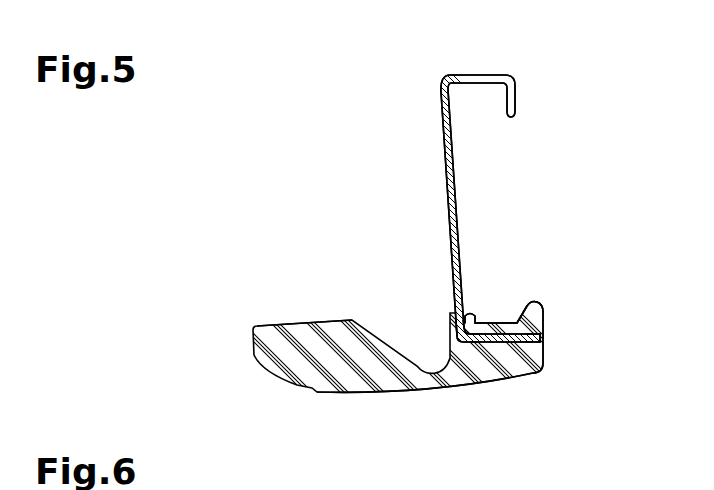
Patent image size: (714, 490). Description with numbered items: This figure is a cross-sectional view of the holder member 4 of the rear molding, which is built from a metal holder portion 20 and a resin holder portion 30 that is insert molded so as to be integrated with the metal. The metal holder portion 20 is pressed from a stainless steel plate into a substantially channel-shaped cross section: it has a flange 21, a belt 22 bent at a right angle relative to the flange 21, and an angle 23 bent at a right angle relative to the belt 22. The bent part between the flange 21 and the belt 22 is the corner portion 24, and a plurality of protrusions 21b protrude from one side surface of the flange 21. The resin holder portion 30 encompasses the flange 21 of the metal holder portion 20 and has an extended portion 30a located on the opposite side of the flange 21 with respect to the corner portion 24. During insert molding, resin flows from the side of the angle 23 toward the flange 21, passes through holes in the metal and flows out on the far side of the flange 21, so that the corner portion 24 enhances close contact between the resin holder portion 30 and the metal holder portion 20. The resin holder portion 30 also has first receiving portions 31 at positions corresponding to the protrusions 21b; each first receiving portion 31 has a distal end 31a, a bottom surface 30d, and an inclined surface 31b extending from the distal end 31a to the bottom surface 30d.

The holder member 4 is at (357, 146).
The metal holder portion 20 is at (445, 168).
The flange 21 is at (493, 340).
The protrusions 21b is at (525, 353).
The belt 22 is at (452, 151).
The angle 23 is at (478, 73).
The corner portion 24 is at (475, 323).
The resin holder portion 30 is at (445, 350).
The extended portion 30a is at (318, 343).
The bottom surface 30d is at (373, 390).
The first receiving portions 31 is at (543, 307).
The distal end 31a is at (535, 300).
The inclined surface 31b is at (520, 322).